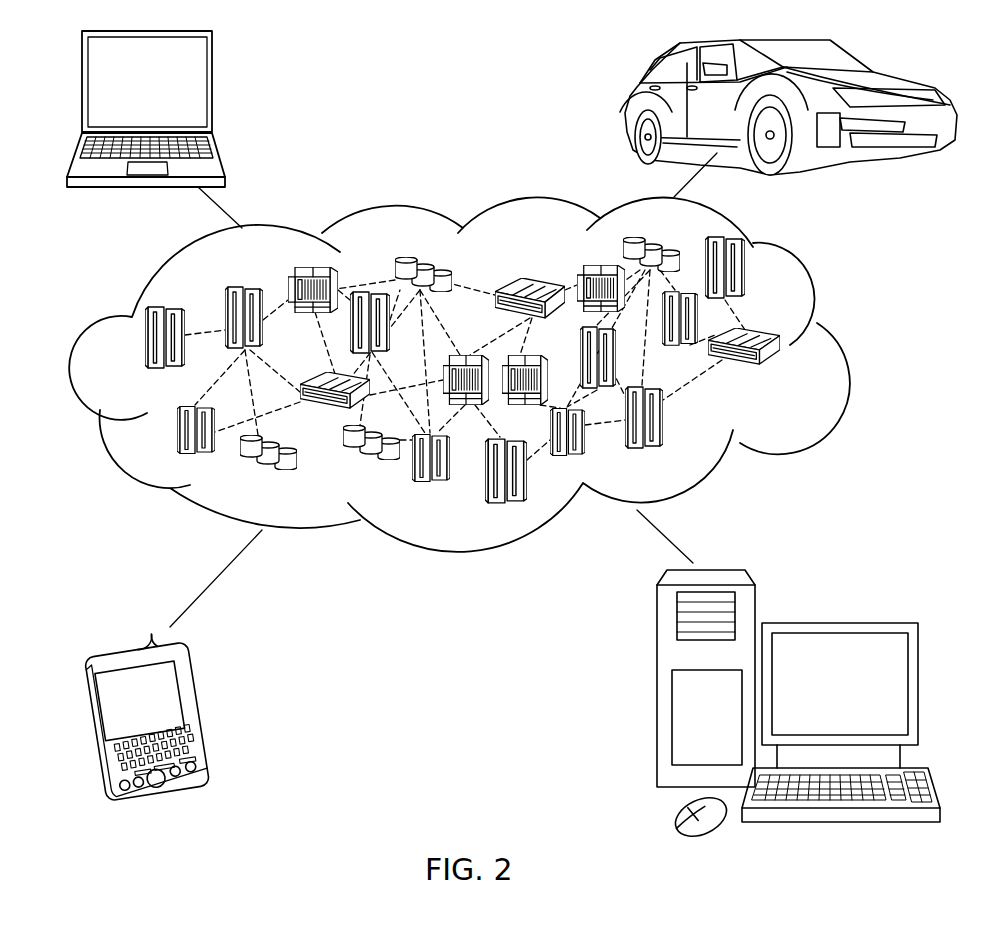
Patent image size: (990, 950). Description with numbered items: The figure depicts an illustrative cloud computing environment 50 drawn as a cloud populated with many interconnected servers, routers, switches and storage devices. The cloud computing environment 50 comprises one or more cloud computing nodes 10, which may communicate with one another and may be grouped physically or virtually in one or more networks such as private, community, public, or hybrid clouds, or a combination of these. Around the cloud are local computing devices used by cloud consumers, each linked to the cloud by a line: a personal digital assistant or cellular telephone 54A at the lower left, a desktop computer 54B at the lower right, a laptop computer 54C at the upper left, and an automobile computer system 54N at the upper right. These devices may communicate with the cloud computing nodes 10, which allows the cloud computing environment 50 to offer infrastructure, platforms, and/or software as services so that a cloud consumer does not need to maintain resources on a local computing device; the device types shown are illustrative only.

The cloud computing node 10 is at (796, 380).
The cloud computing environment 50 is at (480, 374).
The personal digital assistant or cellular telephone 54A is at (200, 716).
The desktop computer 54B is at (837, 622).
The laptop computer 54C is at (212, 91).
The automobile computer system 54N is at (630, 100).